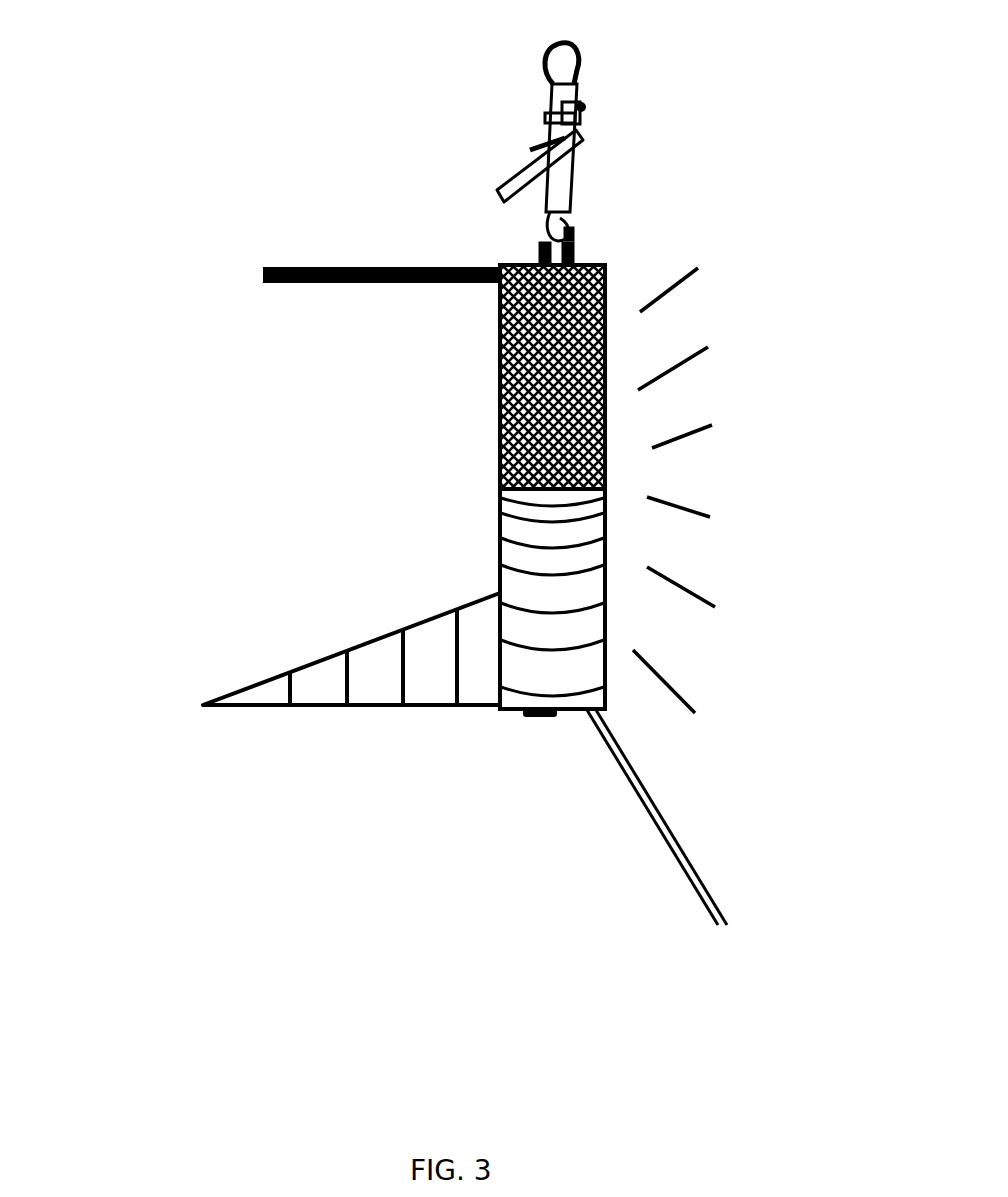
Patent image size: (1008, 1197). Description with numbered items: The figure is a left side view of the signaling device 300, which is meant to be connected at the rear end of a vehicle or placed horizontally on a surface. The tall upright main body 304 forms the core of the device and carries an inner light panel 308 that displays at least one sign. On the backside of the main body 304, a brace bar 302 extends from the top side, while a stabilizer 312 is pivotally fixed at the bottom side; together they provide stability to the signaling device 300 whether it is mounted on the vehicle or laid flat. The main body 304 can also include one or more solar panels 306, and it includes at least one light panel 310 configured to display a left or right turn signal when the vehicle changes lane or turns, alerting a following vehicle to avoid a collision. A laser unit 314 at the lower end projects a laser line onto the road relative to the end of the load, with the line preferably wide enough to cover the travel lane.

The signaling device 300 is at (190, 190).
The brace bar 302 is at (262, 274).
The main body 304 is at (605, 265).
The solar panel 306 is at (500, 432).
The inner light panel 308 is at (605, 490).
The light panel 310 is at (540, 535).
The stabilizer 312 is at (360, 682).
The laser unit 314 is at (703, 873).